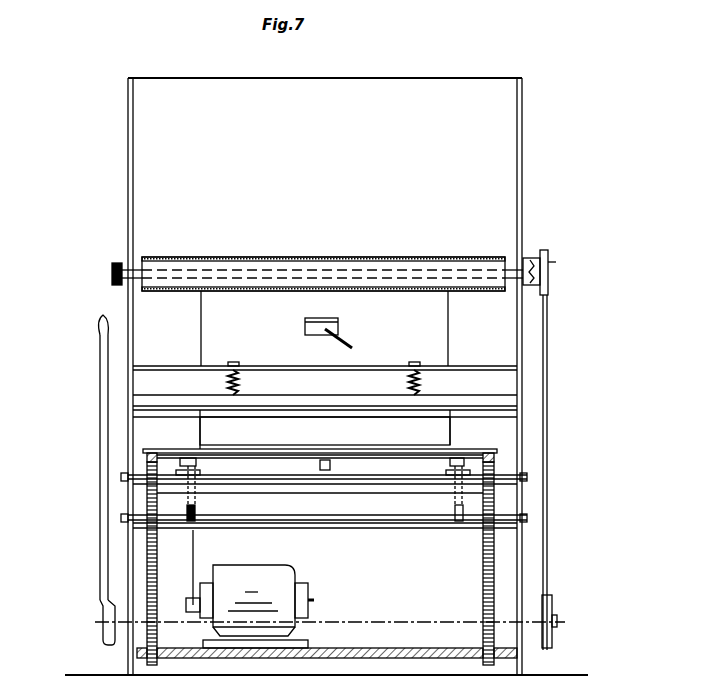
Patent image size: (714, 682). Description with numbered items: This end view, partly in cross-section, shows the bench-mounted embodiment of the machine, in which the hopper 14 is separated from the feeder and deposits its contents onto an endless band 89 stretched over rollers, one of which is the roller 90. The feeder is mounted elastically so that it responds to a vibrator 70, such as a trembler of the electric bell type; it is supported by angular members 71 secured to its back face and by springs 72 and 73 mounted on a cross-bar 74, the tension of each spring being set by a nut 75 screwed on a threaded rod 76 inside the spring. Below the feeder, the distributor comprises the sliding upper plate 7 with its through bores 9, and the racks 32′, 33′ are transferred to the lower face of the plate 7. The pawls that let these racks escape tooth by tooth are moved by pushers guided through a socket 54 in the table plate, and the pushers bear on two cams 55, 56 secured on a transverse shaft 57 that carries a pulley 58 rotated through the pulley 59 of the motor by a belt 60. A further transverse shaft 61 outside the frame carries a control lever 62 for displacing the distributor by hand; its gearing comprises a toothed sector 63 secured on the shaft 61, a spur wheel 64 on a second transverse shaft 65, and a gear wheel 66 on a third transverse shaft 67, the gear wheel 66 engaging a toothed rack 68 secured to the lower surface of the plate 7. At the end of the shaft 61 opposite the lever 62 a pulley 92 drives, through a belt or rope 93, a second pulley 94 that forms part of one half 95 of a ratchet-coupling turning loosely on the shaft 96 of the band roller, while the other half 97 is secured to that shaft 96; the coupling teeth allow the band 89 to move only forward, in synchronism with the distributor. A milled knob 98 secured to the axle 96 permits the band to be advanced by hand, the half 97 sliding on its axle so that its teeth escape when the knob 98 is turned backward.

The hopper 14 is at (420, 98).
The endless band 89 is at (215, 258).
The shaft of the roller 96 is at (318, 270).
The roller 90 is at (175, 289).
The milled knob 98 is at (112, 276).
The half of the ratchet-coupling 97 is at (525, 262).
The second pulley 94 is at (548, 276).
The half of the ratchet-coupling 95 is at (550, 262).
The belt or rope 93 is at (548, 352).
The vibrator 70 is at (326, 326).
The angular member 71 is at (470, 368).
The cross-bar 74 is at (166, 382).
The spring 72 is at (242, 384).
The spring 73 is at (408, 384).
The nut 75 is at (236, 362).
The threaded rod 76 is at (323, 382).
The upper plate 7 is at (355, 475).
The rack 32′ is at (200, 456).
The rack 33′ is at (452, 448).
The through bore 9 is at (365, 482).
The toothed rack 68 is at (143, 451).
The toothed sector 63 is at (147, 580).
The spur wheel 64 is at (147, 533).
The gear wheel 66 is at (128, 476).
The cam 55 is at (128, 516).
The second transverse shaft 65 is at (325, 535).
The third transverse shaft 67 is at (248, 484).
The transverse shaft 57 is at (240, 516).
The socket 54 is at (190, 458).
The pulley 58 is at (196, 518).
The cam 56 is at (465, 508).
The belt 60 is at (194, 548).
The pulley of the motor 59 is at (188, 604).
The transverse shaft 61 is at (320, 616).
The pulley 92 is at (552, 645).
The control lever 62 is at (100, 339).